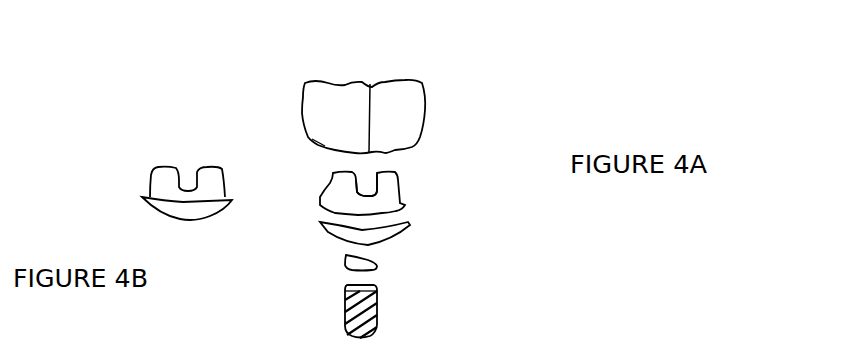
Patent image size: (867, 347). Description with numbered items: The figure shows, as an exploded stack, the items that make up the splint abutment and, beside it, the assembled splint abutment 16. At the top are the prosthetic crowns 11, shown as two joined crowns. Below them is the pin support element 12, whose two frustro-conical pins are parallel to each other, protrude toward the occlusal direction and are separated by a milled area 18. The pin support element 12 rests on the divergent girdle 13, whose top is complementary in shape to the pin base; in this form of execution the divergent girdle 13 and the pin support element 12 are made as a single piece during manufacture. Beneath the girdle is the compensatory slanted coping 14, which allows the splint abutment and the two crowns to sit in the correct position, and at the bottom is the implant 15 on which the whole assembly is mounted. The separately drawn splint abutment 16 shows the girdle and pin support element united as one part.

In FIG. 4A, the prosthetic crowns 11 is at (407, 100).
In FIG. 4A, the pin support element 12 is at (403, 195).
In FIG. 4A, the divergent girdle 13 is at (400, 237).
In FIG. 4A, the compensatory slanted coping 14 is at (380, 270).
In FIG. 4A, the implant 15 is at (378, 310).
In FIG. 4B, the splint abutment 16 is at (140, 188).
In FIG. 4A, the milled area 18 is at (365, 182).